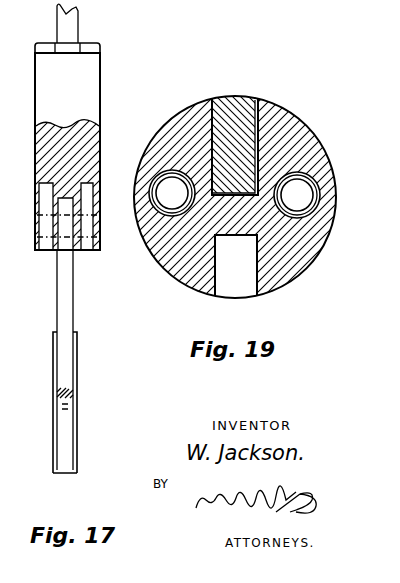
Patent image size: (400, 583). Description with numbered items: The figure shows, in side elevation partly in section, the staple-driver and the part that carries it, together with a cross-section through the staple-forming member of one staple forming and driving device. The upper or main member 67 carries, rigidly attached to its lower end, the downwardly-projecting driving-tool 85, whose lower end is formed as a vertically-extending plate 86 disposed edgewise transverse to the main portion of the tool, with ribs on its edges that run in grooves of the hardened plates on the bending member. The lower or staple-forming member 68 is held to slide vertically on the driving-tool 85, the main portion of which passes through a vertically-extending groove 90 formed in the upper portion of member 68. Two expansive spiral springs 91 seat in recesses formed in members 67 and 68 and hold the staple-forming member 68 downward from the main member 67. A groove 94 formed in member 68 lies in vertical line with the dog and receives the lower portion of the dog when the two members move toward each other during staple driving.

In FIG. 17, the upper or main member 67 is at (67, 127).
In FIG. 19, the lower or staple-forming member 68 is at (303, 148).
In FIG. 17, the driving-tool 85 is at (67, 311).
In FIG. 19, the driving-tool 85 is at (245, 102).
In FIG. 17, the vertically-extending plate 86 is at (70, 417).
In FIG. 19, the vertically-extending groove 90 is at (210, 133).
In FIG. 19, the expansive spiral spring 91 is at (156, 176).
In FIG. 19, the groove 94 is at (236, 265).